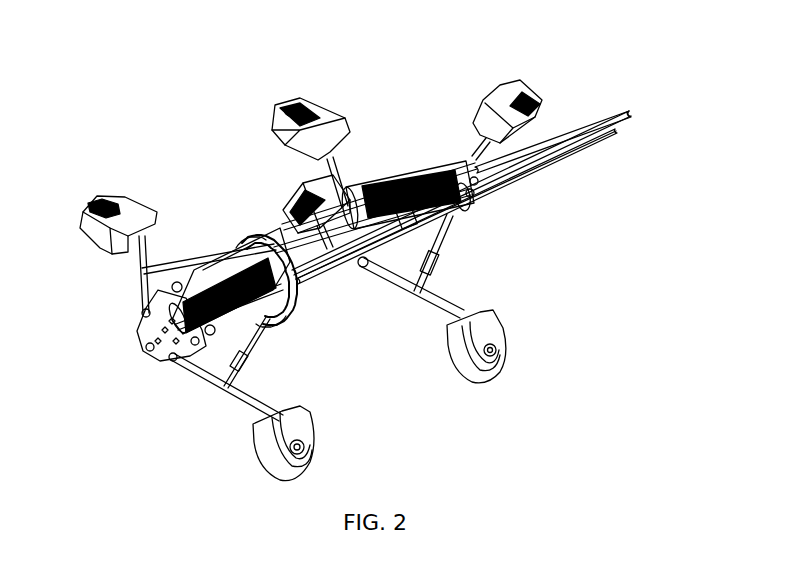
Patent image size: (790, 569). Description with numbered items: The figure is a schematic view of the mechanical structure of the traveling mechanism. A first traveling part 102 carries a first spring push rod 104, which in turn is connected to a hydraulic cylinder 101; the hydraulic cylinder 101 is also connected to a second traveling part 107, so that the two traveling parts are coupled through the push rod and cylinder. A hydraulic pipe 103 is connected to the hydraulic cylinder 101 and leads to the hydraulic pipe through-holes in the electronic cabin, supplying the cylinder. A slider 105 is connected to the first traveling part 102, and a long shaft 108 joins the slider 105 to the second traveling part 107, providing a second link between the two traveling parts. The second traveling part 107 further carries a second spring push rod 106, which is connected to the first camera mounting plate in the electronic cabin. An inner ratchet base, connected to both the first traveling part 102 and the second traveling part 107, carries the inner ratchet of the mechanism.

The hydraulic cylinder 101 is at (296, 226).
The first traveling part 102 is at (172, 358).
The hydraulic pipe 103 is at (530, 173).
The first spring push rod 104 is at (198, 268).
The slider 105 is at (288, 250).
The second spring push rod 106 is at (403, 172).
The second traveling part 107 is at (455, 160).
The long shaft 108 is at (342, 270).